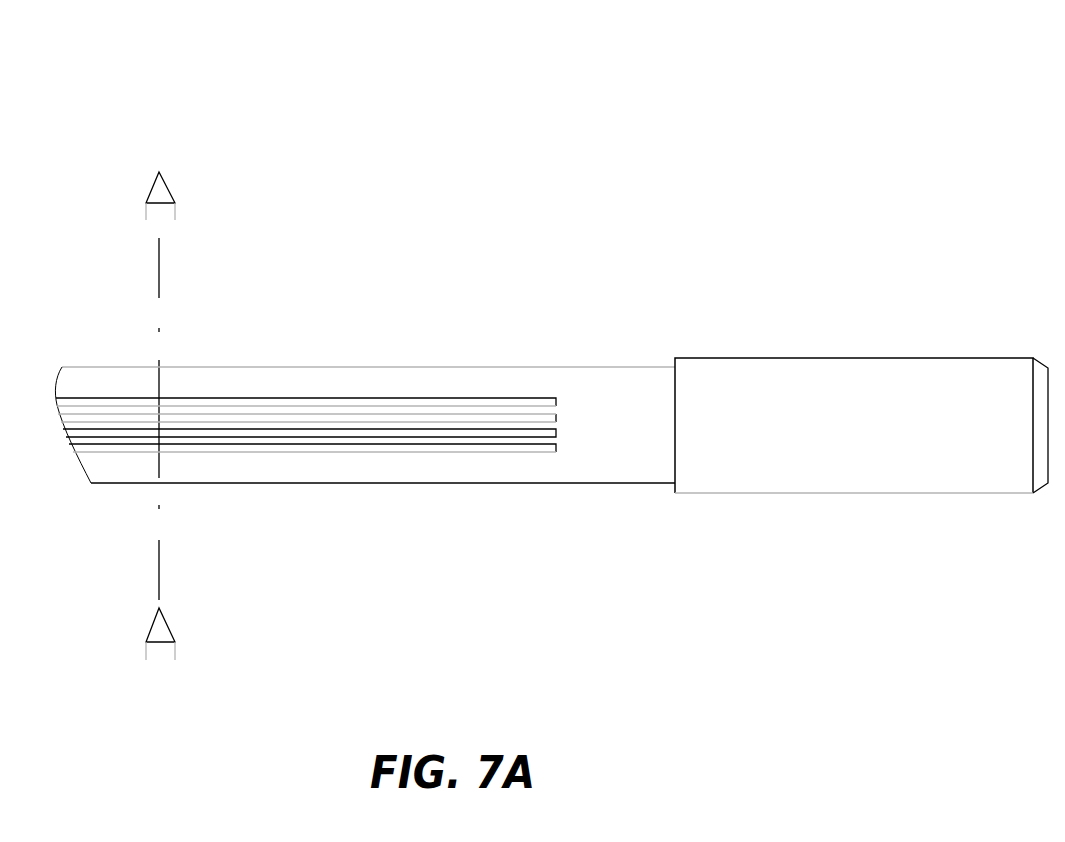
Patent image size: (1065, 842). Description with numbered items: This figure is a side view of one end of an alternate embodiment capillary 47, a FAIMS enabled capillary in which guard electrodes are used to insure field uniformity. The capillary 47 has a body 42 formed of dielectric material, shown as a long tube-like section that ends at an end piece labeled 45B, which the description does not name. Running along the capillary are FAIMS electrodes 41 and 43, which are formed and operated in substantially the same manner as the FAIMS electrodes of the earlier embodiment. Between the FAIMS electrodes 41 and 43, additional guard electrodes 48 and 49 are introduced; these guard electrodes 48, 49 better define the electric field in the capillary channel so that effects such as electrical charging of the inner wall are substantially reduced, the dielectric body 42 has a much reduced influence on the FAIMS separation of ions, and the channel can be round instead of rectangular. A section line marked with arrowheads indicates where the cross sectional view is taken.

The FAIMS electrode 41 is at (368, 437).
The body 42 is at (240, 363).
The FAIMS electrode 43 is at (360, 392).
The connector 45B is at (827, 328).
The capillary 47 is at (748, 128).
The guard electrode 48 is at (410, 407).
The guard electrode 49 is at (445, 420).